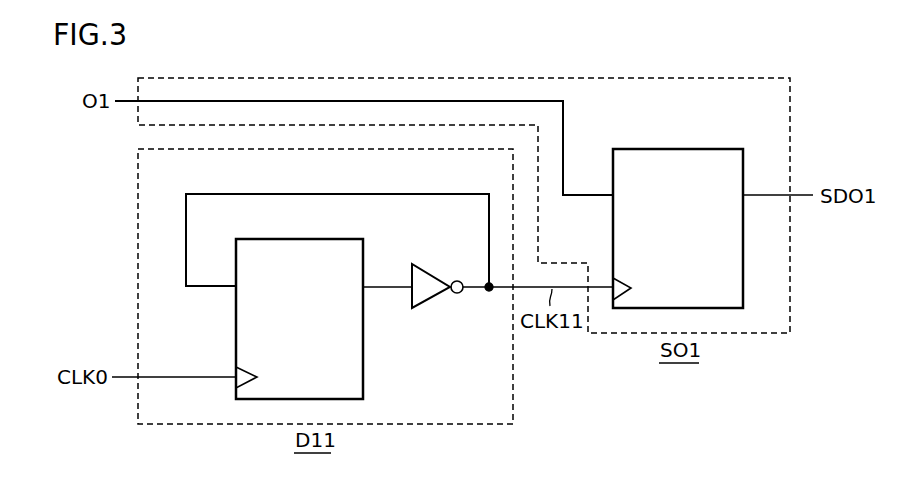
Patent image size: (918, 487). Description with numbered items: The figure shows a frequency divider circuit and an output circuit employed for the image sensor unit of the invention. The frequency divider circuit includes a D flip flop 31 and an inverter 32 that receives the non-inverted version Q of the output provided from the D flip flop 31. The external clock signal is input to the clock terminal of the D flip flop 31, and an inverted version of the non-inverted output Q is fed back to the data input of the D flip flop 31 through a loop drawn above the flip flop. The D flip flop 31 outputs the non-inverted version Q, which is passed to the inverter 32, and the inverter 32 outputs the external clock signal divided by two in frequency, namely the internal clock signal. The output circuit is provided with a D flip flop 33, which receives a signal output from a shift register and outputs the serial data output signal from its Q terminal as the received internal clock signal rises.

The D flip flop 31 is at (363, 377).
The inverter 32 is at (436, 300).
The D flip flop 33 is at (714, 148).